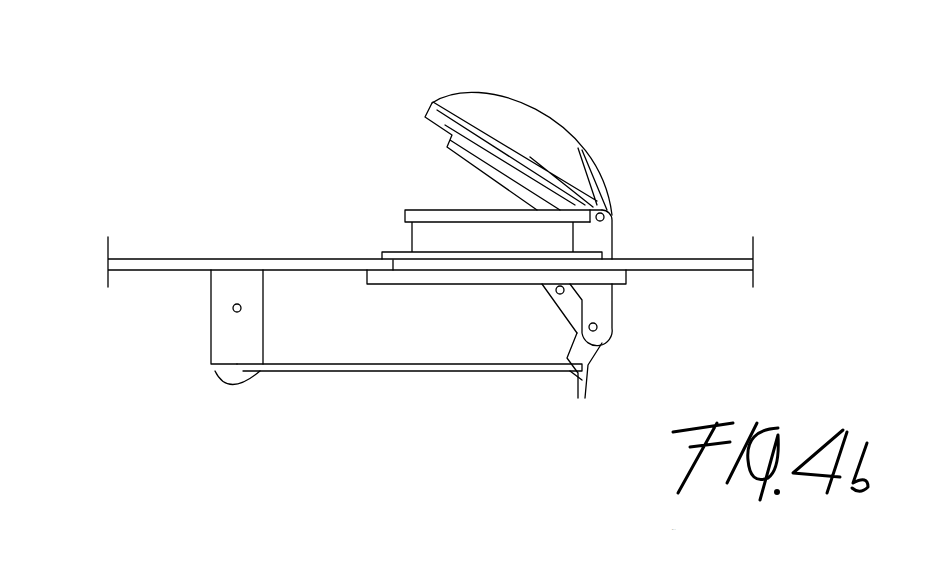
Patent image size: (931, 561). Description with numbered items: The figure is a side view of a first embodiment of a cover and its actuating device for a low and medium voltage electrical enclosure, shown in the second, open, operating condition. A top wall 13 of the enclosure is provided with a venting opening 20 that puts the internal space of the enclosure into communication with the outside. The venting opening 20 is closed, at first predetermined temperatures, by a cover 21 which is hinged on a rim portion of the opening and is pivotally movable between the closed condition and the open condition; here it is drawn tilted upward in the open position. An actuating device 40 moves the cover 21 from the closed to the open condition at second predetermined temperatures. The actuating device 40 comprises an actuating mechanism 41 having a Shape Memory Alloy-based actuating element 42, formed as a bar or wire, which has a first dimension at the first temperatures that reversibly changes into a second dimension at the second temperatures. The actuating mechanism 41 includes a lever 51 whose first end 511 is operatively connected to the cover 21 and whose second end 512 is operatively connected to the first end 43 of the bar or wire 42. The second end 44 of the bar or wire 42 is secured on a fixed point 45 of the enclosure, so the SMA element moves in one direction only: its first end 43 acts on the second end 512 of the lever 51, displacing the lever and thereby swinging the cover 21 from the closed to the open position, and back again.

The top wall 13 is at (151, 258).
The venting opening 20 is at (427, 207).
The cover 21 is at (528, 117).
The actuating device 40 is at (627, 250).
The actuating mechanism 41 is at (535, 370).
The SMA-based actuating element 42 is at (387, 369).
The first end of the bar or wire 43 is at (582, 390).
The second end of the bar or wire 44 is at (237, 368).
The fixed point 45 is at (215, 369).
The lever 51 is at (570, 308).
The first end of the lever 511 is at (537, 210).
The second end of the lever 512 is at (597, 360).